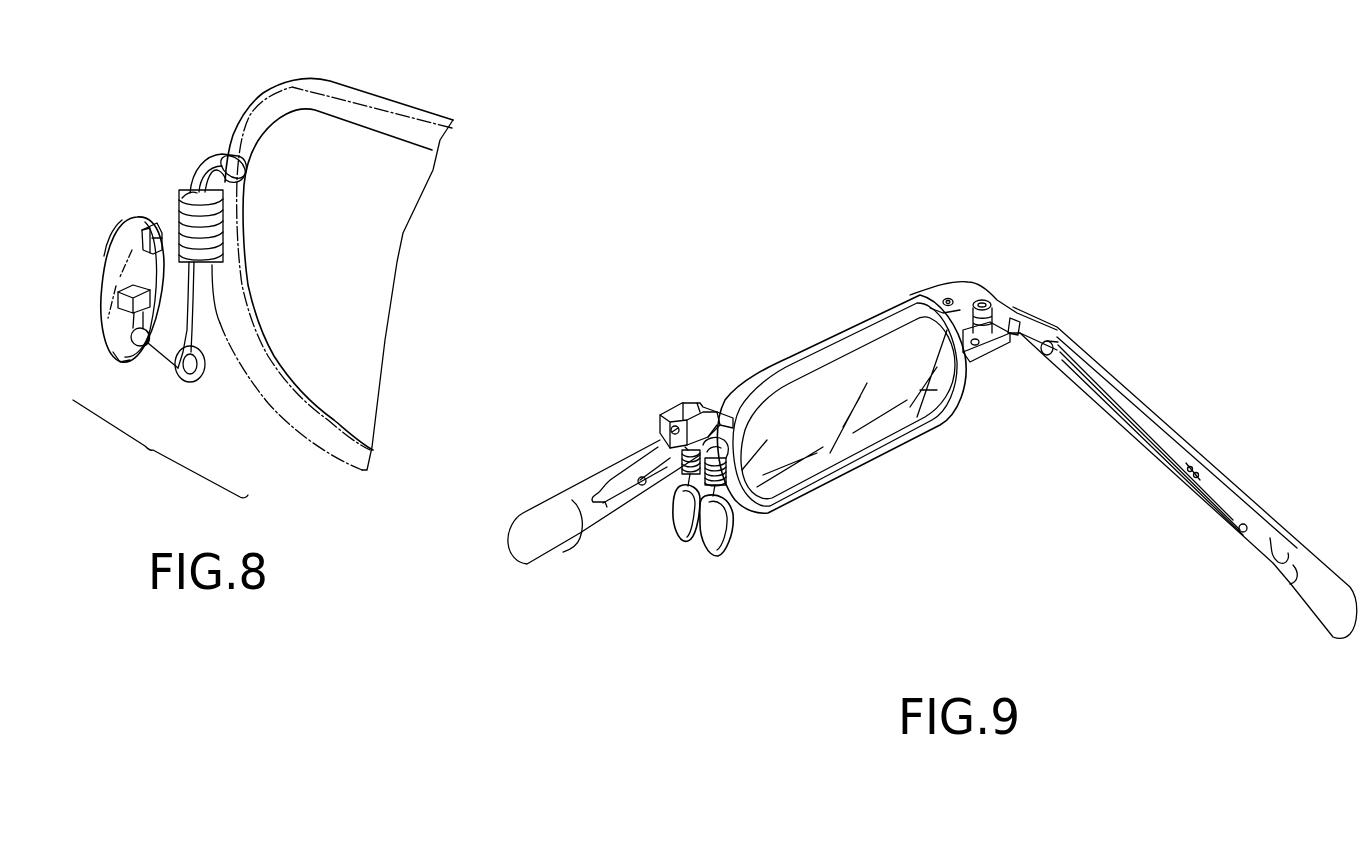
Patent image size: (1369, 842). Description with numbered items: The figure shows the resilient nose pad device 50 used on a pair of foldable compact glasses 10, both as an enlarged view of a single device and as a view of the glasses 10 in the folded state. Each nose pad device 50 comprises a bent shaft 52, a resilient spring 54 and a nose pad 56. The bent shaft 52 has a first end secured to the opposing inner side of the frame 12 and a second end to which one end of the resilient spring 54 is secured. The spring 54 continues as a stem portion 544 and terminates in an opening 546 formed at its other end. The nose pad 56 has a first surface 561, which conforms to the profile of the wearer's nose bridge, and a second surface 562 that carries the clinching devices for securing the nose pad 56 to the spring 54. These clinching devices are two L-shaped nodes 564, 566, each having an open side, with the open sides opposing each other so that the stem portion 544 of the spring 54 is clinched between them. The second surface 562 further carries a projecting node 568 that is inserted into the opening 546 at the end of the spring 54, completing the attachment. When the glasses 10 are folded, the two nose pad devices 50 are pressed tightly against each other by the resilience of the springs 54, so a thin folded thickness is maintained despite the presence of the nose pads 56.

In FIG. 9, the foldable compact glasses 10 is at (774, 310).
In FIG. 8, the frame 12 is at (280, 86).
In FIG. 9, the frame 12 is at (880, 338).
In FIG. 8, the resilient nose pad device 50 is at (118, 128).
In FIG. 9, the resilient nose pad device 50 is at (670, 533).
In FIG. 8, the bent shaft 52 is at (191, 195).
In FIG. 8, the resilient spring 54 is at (218, 221).
In FIG. 8, the stem portion 544 is at (194, 325).
In FIG. 8, the opening 546 is at (187, 382).
In FIG. 8, the nose pad 56 is at (100, 296).
In FIG. 8, the first surface 561 is at (102, 262).
In FIG. 8, the second surface 562 is at (113, 326).
In FIG. 8, the L-shaped node 564 is at (147, 221).
In FIG. 8, the L-shaped node 566 is at (117, 360).
In FIG. 8, the projecting node 568 is at (132, 364).